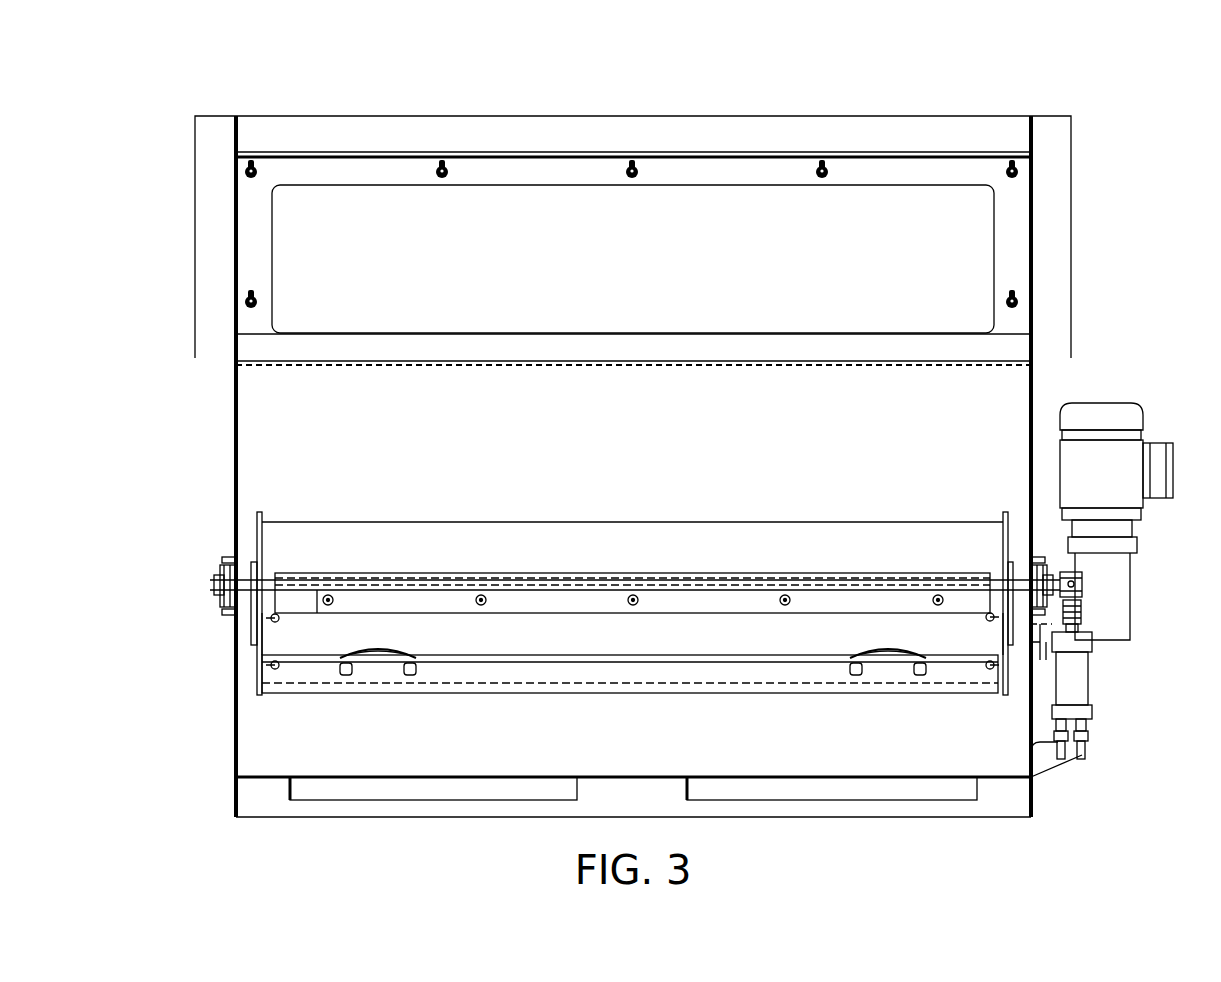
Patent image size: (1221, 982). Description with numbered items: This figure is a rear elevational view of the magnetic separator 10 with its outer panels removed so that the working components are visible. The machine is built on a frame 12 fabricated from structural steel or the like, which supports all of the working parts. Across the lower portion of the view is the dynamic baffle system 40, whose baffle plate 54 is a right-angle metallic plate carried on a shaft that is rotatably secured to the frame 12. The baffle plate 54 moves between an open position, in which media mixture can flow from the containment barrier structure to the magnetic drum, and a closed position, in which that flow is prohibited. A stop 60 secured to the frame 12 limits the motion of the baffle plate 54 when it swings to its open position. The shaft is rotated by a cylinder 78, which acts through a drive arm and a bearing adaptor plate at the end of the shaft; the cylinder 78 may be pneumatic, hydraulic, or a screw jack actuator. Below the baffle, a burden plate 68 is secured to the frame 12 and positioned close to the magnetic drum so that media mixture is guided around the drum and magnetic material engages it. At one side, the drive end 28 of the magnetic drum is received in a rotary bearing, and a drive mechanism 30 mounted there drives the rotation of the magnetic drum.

The magnetic separator 10 is at (1104, 123).
The frame 12 is at (236, 174).
The drive end 28 is at (220, 612).
The drive mechanism 30 is at (1142, 425).
The dynamic baffle system 40 is at (623, 556).
The baffle plate 54 is at (358, 577).
The stop 60 is at (1041, 640).
The burden plate 68 is at (507, 668).
The cylinder 78 is at (1077, 680).